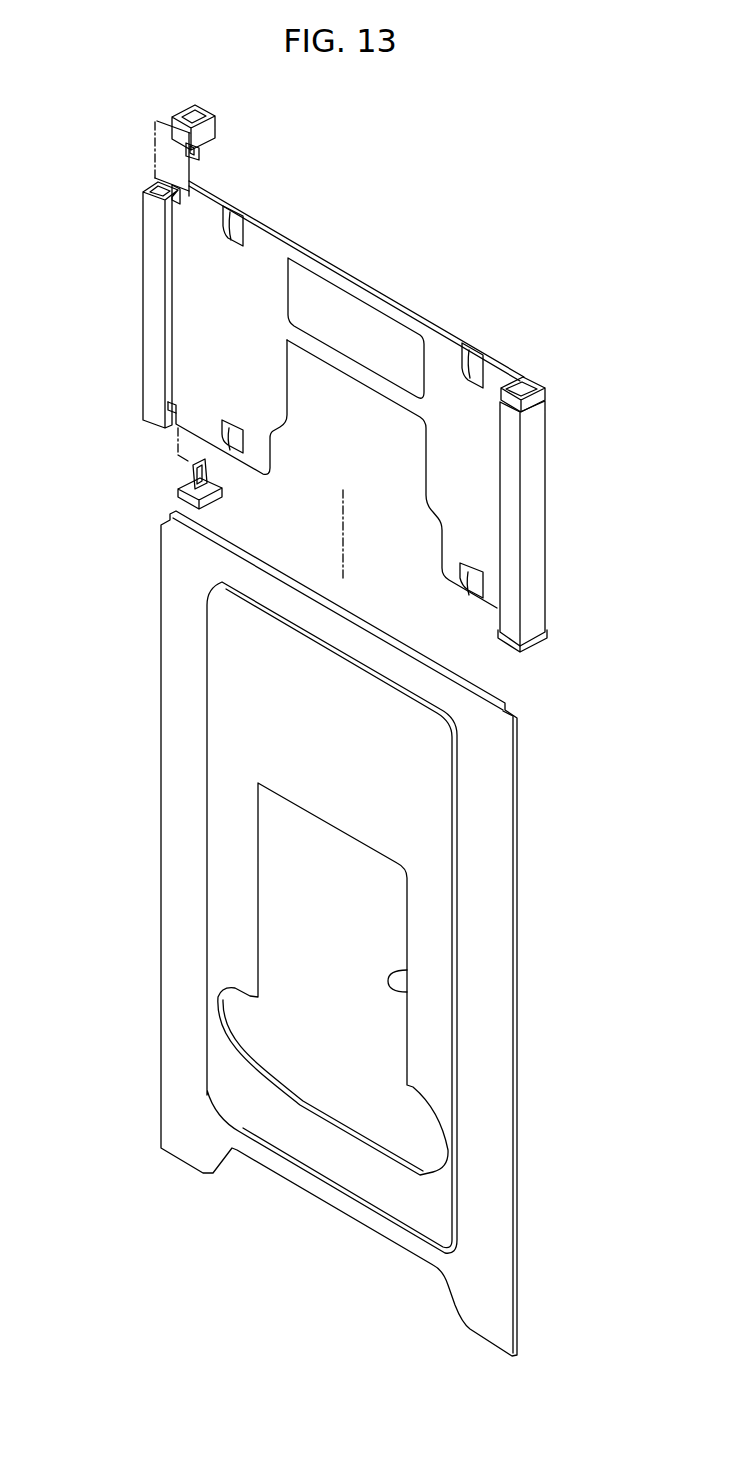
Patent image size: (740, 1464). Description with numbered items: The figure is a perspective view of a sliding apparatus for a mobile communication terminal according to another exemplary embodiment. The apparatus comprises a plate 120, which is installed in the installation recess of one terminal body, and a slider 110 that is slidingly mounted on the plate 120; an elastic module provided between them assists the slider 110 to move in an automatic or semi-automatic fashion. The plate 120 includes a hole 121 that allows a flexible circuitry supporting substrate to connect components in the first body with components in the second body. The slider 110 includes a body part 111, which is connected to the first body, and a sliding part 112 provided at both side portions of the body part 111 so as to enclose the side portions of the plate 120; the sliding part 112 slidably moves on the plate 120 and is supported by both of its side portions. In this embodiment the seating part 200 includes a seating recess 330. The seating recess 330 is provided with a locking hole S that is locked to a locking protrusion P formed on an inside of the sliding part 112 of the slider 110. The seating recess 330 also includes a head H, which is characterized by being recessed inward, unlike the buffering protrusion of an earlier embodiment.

The slider 110 is at (398, 259).
The body part 111 is at (300, 240).
The sliding part 112 is at (150, 259).
The plate 120 is at (497, 850).
The hole 121 is at (405, 992).
The seating part 200 is at (238, 208).
The seating recess 330 is at (211, 107).
The head H is at (212, 121).
The locking hole S is at (204, 150).
The locking protrusion P is at (158, 183).